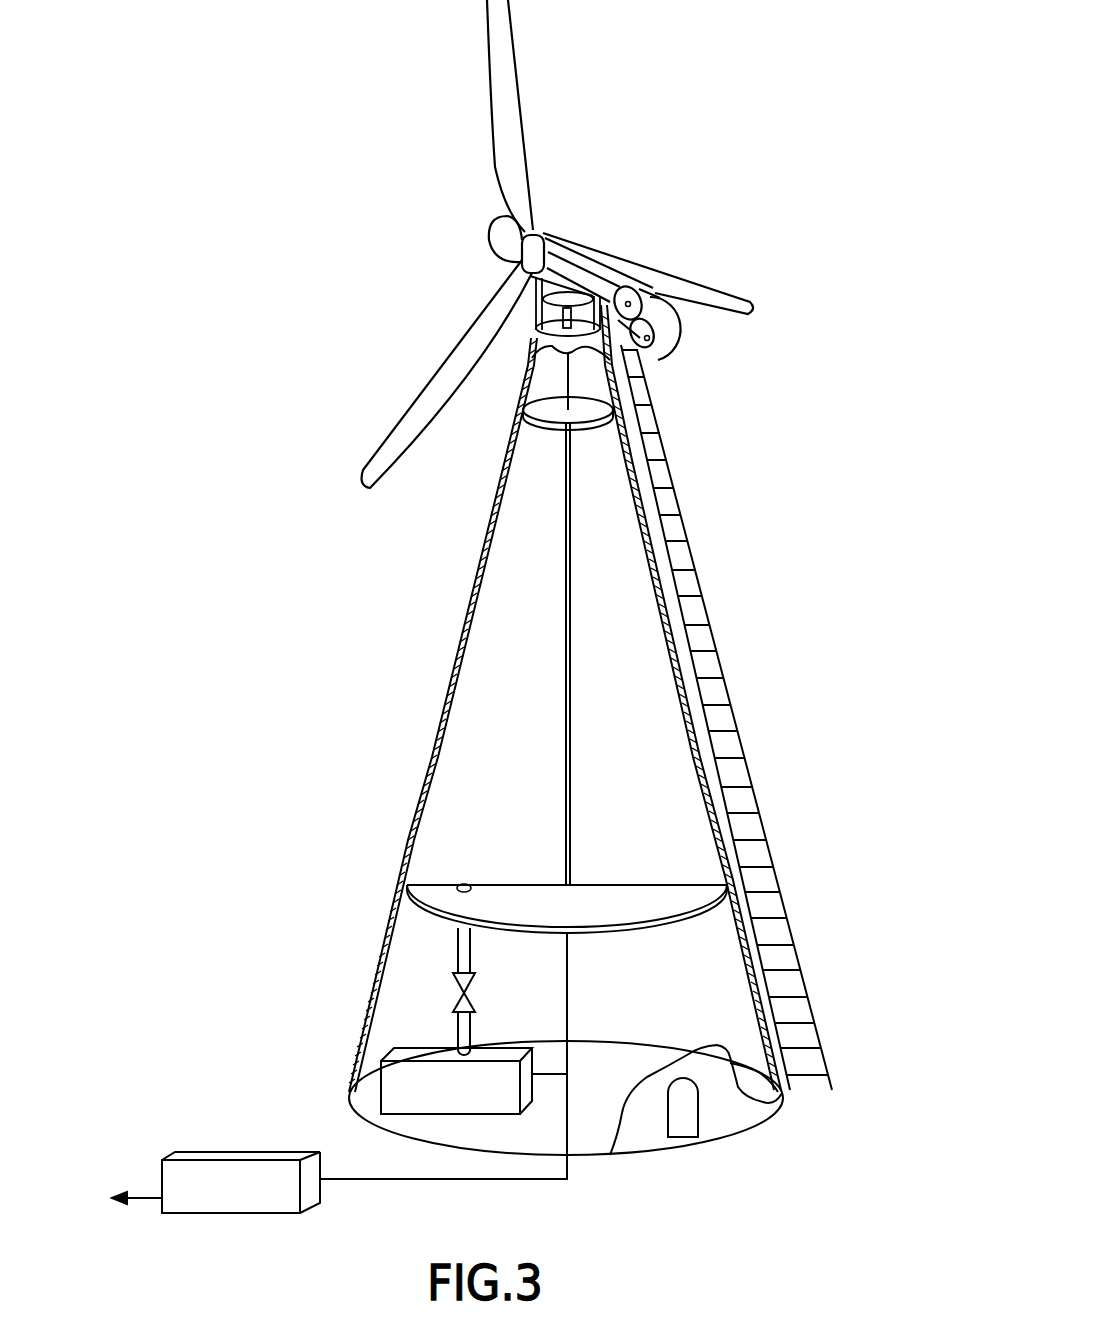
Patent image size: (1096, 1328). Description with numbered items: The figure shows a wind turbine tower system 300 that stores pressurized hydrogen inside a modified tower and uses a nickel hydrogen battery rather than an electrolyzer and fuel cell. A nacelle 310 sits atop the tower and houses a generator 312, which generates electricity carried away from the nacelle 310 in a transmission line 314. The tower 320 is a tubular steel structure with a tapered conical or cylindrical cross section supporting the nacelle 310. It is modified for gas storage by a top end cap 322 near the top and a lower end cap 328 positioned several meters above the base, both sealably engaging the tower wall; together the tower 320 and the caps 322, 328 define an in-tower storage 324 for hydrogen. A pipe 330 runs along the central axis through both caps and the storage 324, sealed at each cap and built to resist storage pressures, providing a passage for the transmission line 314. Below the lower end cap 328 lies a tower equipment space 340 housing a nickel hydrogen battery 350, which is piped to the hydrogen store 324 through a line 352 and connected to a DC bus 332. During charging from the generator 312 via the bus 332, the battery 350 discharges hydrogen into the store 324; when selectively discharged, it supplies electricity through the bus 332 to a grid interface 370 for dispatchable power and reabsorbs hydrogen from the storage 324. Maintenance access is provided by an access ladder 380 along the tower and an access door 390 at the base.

The wind turbine tower system 300 is at (279, 296).
The nacelle 310 is at (568, 232).
The generator 312 is at (654, 297).
The transmission line 314 is at (565, 370).
The tower 320 is at (504, 454).
The top end cap 322 is at (527, 407).
The in-tower storage 324 is at (490, 617).
The lower end cap 328 is at (430, 892).
The pipe 330 is at (565, 492).
The DC bus 332 is at (570, 1058).
The tower equipment space 340 is at (723, 1003).
The nickel hydrogen battery 350 is at (387, 1073).
The line 352 is at (455, 1020).
The grid interface 370 is at (251, 1152).
The access ladder 380 is at (666, 440).
The access door 390 is at (690, 1115).